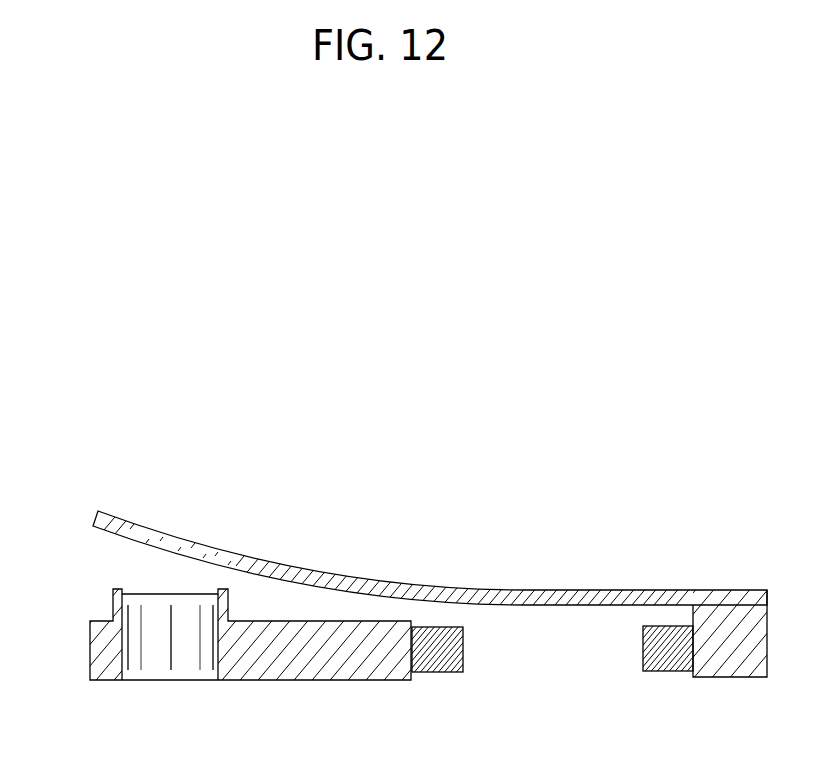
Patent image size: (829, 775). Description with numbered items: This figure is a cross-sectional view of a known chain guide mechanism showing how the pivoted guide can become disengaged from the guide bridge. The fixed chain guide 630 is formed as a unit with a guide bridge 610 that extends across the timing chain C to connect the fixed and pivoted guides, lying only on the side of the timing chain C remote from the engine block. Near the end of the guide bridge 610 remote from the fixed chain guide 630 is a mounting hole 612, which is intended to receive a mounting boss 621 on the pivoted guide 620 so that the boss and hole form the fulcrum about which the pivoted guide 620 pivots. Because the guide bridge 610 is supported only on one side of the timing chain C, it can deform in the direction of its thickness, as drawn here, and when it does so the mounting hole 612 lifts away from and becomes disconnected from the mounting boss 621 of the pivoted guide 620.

The guide bridge 610 is at (553, 590).
The mounting hole 612 is at (187, 545).
The pivoted guide 620 is at (327, 663).
The mounting boss 621 is at (113, 597).
The fixed chain guide 630 is at (731, 660).
The timing chain C is at (463, 652).